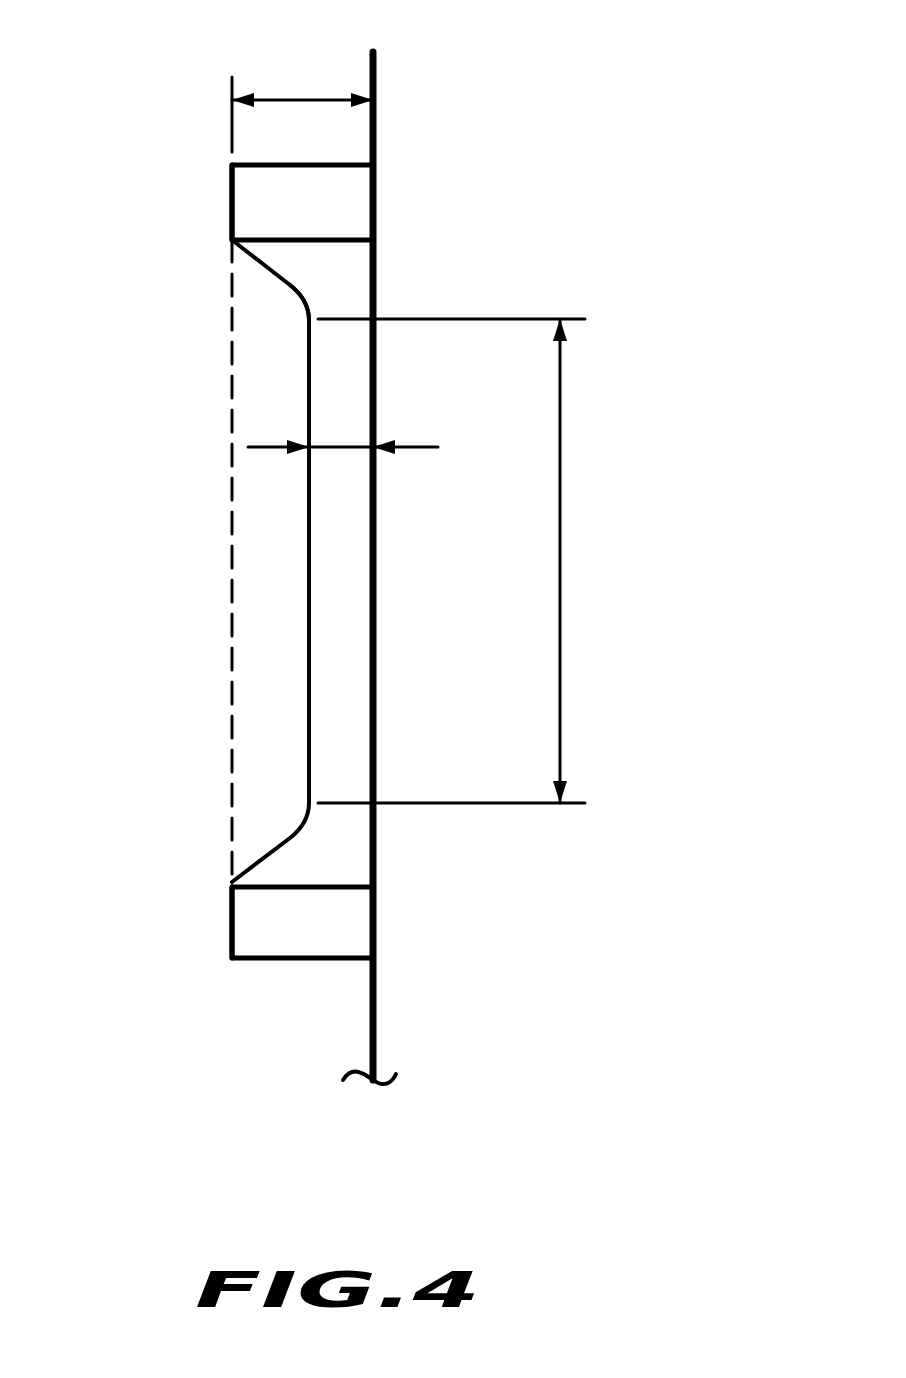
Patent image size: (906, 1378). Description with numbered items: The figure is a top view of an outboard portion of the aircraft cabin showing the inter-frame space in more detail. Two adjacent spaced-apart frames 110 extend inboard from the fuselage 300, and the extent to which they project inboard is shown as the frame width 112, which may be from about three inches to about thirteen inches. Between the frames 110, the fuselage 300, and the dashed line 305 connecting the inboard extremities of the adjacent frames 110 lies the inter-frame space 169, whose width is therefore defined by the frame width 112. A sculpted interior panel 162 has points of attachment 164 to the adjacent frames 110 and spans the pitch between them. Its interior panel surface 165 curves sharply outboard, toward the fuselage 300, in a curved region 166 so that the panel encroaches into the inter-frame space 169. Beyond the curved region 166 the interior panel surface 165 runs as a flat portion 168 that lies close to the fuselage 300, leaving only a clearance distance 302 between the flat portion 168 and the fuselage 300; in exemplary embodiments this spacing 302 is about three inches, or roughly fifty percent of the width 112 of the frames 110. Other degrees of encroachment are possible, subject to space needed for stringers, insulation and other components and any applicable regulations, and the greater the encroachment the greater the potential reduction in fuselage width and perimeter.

The frames 110 is at (335, 200).
The frame width 112 is at (305, 100).
The interior panel 162 is at (309, 518).
The points of attachment 164 is at (232, 205).
The interior panel surface 165 is at (306, 390).
The curved region 166 is at (287, 323).
The flat portion 168 is at (560, 562).
The inter-frame space 169 is at (268, 695).
The fuselage 300 is at (373, 1010).
The clearance distance 302 is at (345, 447).
The dashed line 305 is at (232, 798).